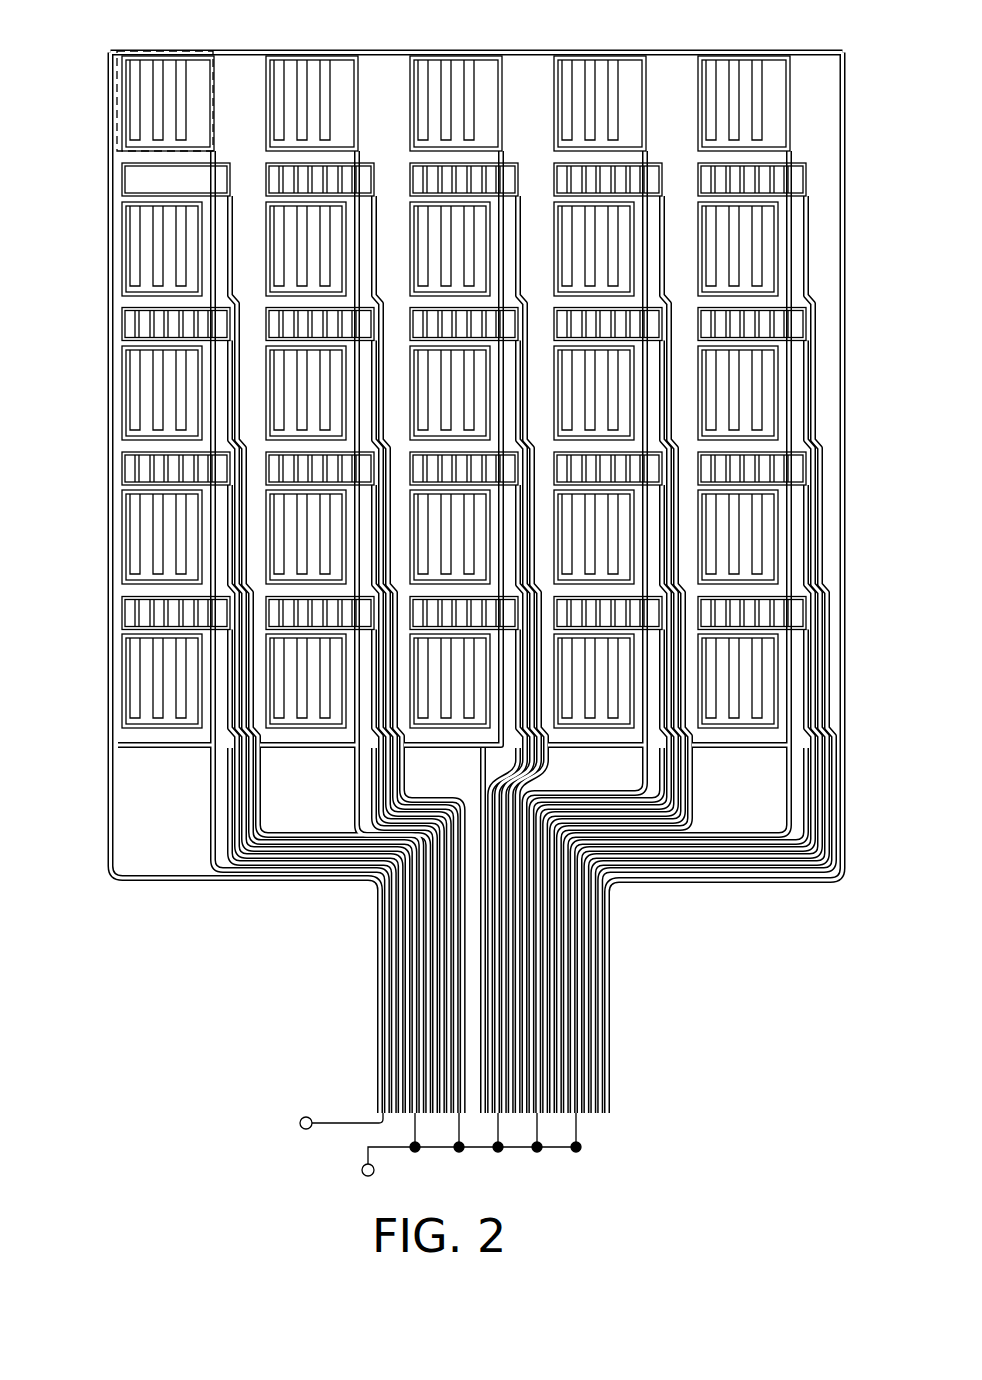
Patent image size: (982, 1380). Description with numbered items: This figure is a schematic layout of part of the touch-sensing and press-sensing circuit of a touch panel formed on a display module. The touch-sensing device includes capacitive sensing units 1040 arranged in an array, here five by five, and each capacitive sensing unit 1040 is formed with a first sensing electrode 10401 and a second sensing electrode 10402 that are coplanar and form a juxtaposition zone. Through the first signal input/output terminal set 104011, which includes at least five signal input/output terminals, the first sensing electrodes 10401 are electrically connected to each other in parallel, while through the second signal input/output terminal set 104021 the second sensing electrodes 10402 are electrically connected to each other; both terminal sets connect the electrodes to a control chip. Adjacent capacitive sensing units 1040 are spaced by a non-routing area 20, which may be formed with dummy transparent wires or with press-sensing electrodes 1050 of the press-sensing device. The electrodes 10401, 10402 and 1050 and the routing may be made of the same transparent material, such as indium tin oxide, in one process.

The non-routing area 20 is at (157, 318).
The capacitive sensing unit 1040 is at (130, 75).
The first sensing electrode 10401 is at (145, 62).
The second sensing electrode 10402 is at (178, 76).
The press-sensing electrode 1050 is at (150, 178).
The second signal input/output terminal set 104021 is at (299, 1121).
The first signal input/output terminal set 104011 is at (362, 1168).